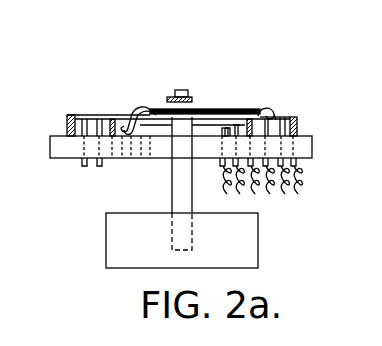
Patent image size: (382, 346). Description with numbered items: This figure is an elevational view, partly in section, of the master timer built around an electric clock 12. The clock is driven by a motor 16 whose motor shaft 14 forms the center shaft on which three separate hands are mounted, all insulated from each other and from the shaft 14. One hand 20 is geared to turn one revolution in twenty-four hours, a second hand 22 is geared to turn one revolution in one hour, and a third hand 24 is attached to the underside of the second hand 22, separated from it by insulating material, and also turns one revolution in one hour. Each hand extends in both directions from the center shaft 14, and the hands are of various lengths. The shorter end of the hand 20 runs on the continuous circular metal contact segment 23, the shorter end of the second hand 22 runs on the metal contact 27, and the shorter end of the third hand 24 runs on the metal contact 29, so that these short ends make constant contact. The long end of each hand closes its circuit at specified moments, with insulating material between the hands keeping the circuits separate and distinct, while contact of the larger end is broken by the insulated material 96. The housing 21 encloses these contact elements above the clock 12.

The electric clock 12 is at (310, 152).
The motor shaft 14 is at (178, 90).
The motor 16 is at (248, 240).
The hand 20 is at (192, 98).
The housing 21 is at (271, 120).
The second hand 22 is at (208, 110).
The continuous circular metal contact segment 23 is at (238, 126).
The third hand 24 is at (145, 108).
The metal contact 27 is at (262, 110).
The metal contact 29 is at (224, 128).
The insulated material 96 is at (298, 127).